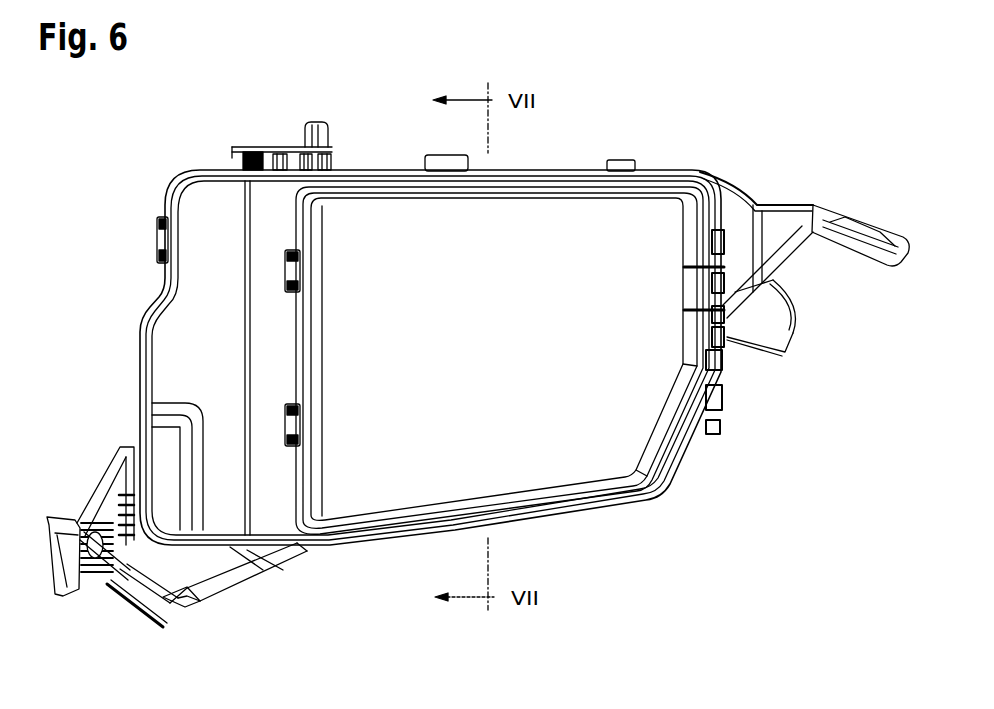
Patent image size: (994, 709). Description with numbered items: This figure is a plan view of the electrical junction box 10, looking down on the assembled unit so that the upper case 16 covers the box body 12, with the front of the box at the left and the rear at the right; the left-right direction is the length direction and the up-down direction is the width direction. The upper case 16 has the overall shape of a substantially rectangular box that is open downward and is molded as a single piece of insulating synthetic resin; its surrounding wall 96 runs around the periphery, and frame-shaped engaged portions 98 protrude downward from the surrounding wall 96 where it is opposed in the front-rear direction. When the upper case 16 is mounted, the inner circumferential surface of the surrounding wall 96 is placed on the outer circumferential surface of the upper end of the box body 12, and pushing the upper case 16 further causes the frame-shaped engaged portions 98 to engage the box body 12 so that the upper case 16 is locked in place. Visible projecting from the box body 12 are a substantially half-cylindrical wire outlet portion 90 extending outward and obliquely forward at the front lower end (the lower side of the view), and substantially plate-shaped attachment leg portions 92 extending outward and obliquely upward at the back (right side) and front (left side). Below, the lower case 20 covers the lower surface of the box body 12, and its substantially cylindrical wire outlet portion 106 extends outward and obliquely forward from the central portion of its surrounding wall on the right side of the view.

The electrical junction box 10 is at (537, 48).
The box body 12 is at (762, 170).
The upper case 16 is at (567, 120).
The lower case 20 is at (233, 612).
The wire outlet portion 90 is at (176, 568).
The attachment leg portion 92 is at (790, 240).
The surrounding wall 96 is at (617, 505).
The frame-shaped engaged portion 98 is at (716, 232).
The wire outlet portion 106 is at (771, 311).